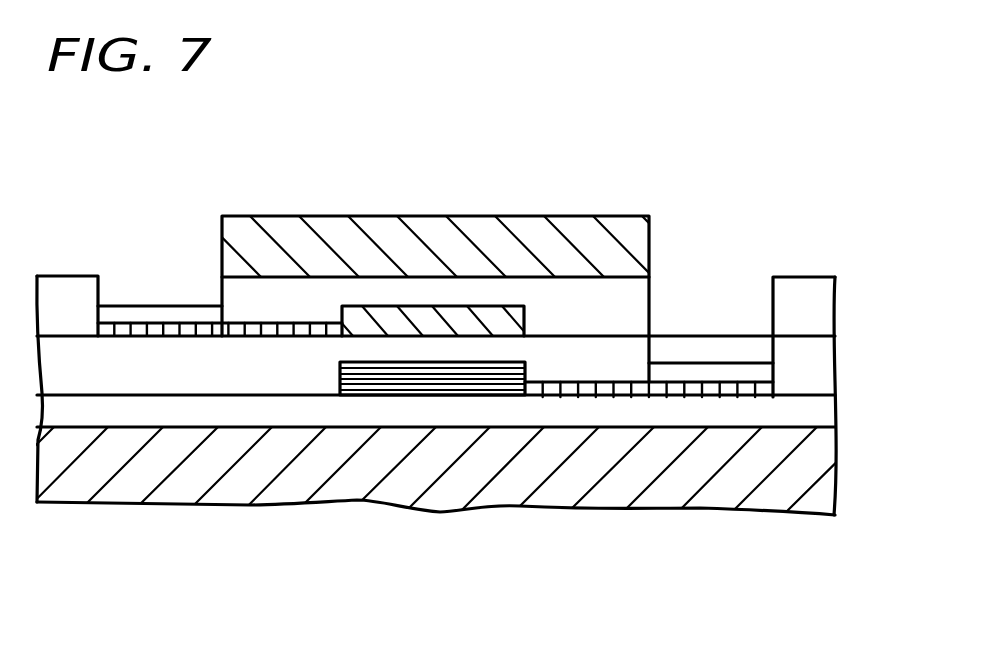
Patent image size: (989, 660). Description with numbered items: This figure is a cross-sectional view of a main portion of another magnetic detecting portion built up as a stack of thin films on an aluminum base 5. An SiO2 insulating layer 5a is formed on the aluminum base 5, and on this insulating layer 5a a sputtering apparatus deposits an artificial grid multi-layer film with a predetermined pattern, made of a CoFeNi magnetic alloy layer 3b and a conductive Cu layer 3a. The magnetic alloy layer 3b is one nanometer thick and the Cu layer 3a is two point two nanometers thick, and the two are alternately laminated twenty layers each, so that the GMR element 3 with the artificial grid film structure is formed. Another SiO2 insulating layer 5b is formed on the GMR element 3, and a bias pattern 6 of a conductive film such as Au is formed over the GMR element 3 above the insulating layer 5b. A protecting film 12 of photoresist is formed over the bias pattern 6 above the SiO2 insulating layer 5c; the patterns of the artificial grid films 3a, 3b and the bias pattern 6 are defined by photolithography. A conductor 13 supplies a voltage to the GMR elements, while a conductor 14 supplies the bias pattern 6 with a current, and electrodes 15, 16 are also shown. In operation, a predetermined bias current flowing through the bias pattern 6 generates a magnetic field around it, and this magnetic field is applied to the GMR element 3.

The GMR element 3 is at (367, 388).
The Cu layer 3a is at (405, 385).
The CoFeNi magnetic alloy layer 3b is at (445, 379).
The aluminum base 5 is at (713, 485).
The SiO2 insulating layer 5a is at (67, 410).
The SiO2 insulating layer 5b is at (67, 353).
The SiO2 insulating layer 5c is at (288, 300).
The bias pattern 6 is at (460, 323).
The protecting film 12 is at (405, 245).
The conductor 13 is at (633, 390).
The conductor 14 is at (153, 330).
The electrode 15 is at (707, 370).
The electrode 16 is at (150, 313).